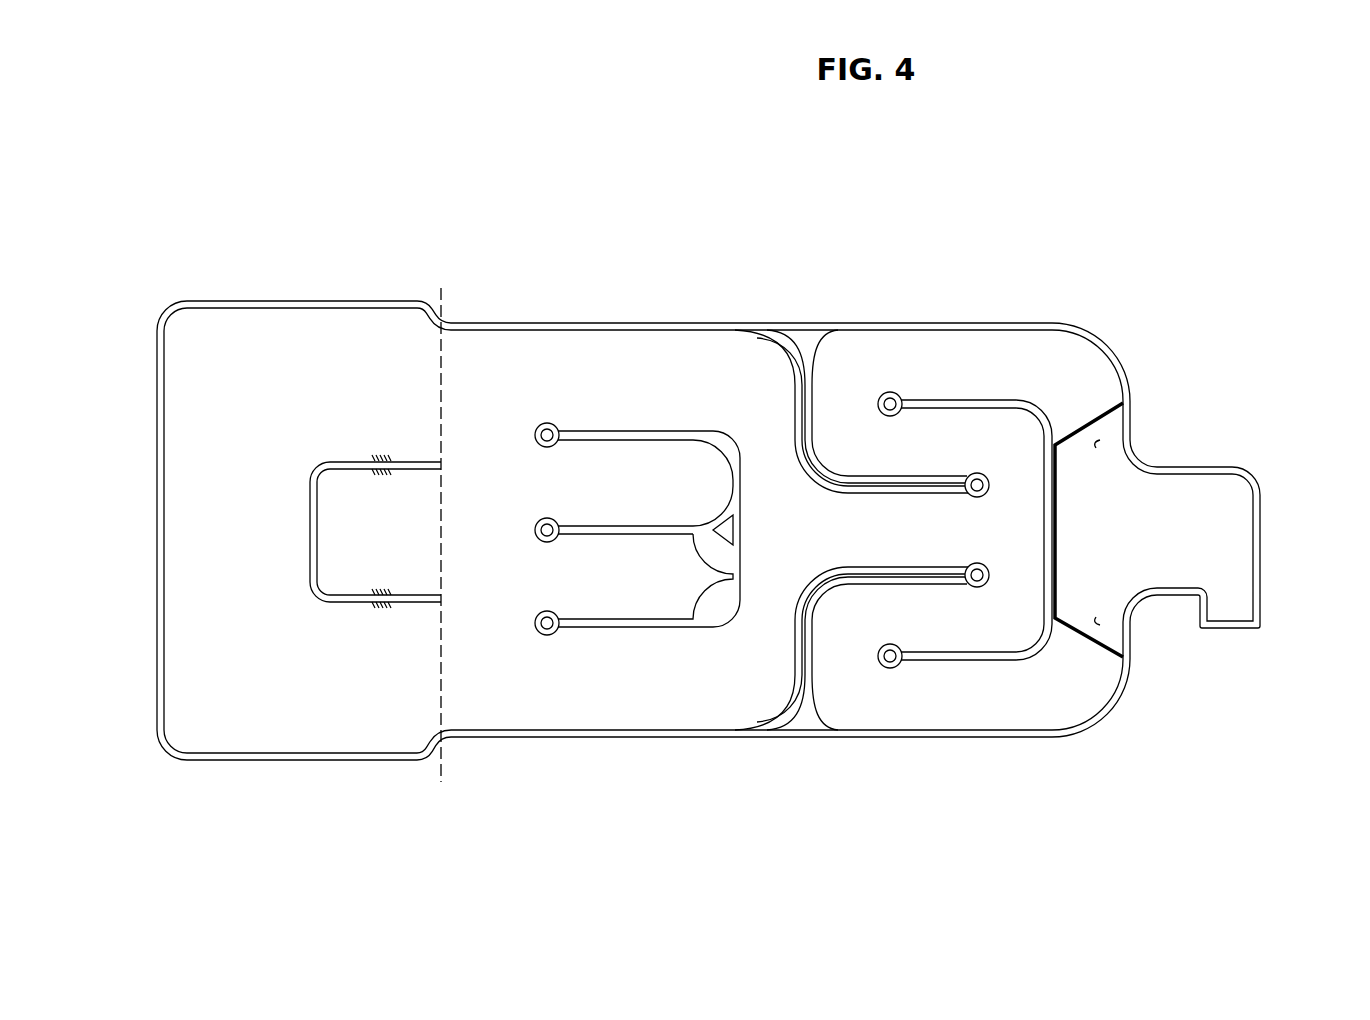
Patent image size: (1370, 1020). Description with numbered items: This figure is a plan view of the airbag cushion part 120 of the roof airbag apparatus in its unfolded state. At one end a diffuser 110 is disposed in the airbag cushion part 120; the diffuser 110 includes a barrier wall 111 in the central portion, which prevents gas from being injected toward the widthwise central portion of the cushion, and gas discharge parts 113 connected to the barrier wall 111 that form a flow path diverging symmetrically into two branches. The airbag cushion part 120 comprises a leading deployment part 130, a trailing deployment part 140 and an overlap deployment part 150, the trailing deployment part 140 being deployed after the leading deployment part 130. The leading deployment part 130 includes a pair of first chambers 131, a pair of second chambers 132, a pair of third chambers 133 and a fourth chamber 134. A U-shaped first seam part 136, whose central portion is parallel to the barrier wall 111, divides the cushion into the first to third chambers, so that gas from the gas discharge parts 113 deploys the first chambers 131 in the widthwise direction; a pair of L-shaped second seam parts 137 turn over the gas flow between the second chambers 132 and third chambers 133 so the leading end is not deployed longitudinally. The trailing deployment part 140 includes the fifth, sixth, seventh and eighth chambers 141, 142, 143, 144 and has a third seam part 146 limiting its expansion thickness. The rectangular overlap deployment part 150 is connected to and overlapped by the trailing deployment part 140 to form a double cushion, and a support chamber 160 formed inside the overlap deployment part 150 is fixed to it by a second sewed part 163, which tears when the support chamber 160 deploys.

The diffuser 110 is at (1218, 530).
The barrier wall 111 is at (1058, 548).
The gas discharge parts 113 is at (1097, 444).
The airbag cushion part 120 is at (1207, 228).
The leading deployment part 130 is at (951, 352).
The first chambers 131 is at (1080, 665).
The second chambers 132 is at (968, 683).
The third chambers 133 is at (932, 617).
The fourth chamber 134 is at (878, 528).
The first seam part 136 is at (1045, 412).
The second seam parts 137 is at (889, 481).
The trailing deployment part 140 is at (608, 318).
The fifth chamber 141 is at (760, 424).
The sixth chamber 142 is at (660, 370).
The seventh chamber 143 is at (490, 507).
The eighth chamber 144 is at (596, 470).
The third seam part 146 is at (737, 568).
The overlap deployment part 150 is at (293, 296).
The support chamber 160 is at (342, 585).
The second sewed part 163 is at (380, 605).